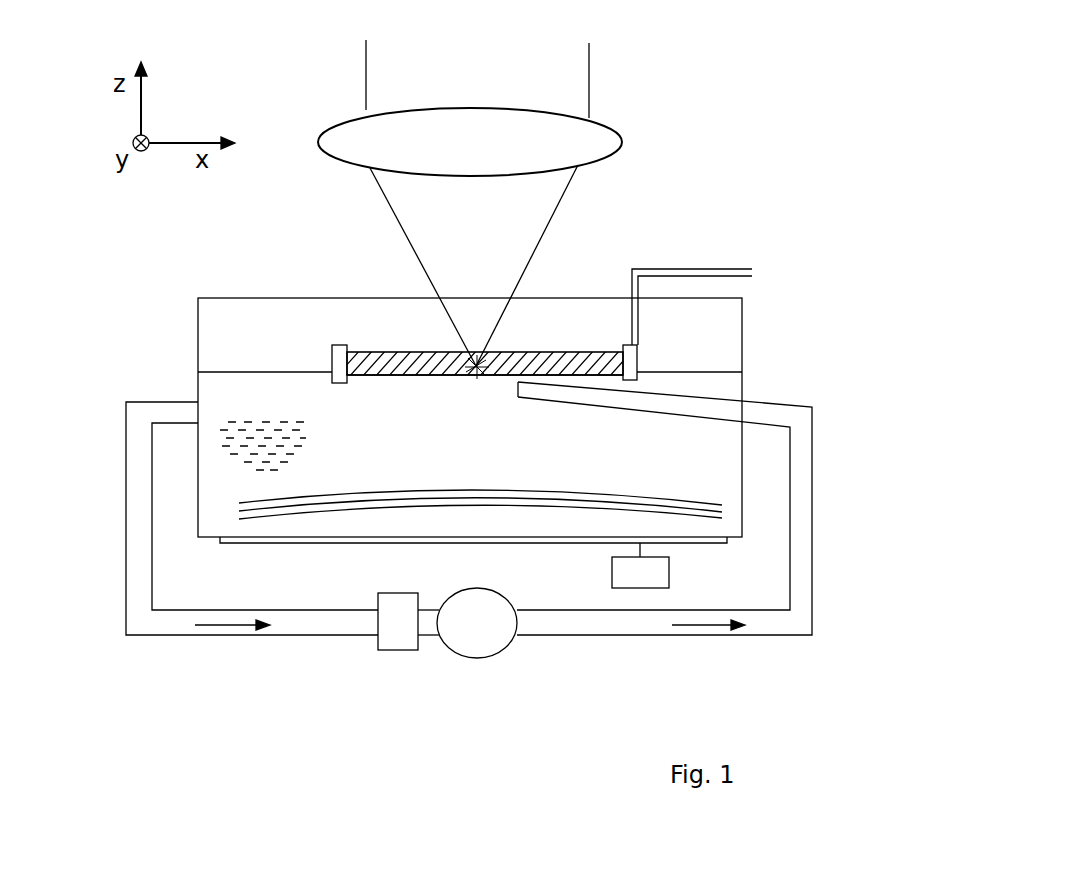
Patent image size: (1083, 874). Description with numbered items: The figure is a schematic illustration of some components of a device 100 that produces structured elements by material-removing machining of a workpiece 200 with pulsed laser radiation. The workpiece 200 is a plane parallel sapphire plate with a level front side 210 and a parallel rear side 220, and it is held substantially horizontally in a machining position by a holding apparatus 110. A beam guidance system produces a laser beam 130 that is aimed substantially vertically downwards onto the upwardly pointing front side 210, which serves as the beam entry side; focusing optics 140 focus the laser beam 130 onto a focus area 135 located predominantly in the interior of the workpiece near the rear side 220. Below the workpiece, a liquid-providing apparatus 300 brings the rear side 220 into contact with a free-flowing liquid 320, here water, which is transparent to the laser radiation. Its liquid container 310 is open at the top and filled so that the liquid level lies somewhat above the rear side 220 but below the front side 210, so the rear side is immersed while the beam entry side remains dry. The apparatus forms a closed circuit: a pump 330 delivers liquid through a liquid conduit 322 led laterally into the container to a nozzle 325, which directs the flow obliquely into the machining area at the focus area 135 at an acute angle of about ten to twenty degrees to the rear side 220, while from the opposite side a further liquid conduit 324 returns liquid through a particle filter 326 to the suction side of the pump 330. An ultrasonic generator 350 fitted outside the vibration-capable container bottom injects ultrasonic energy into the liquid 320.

The device 100 is at (746, 74).
The holding apparatus 110 is at (695, 268).
The laser beam 130 is at (535, 214).
The focus area 135 is at (465, 396).
The focusing optics 140 is at (597, 140).
The workpiece 200 is at (637, 357).
The front side 210 is at (367, 338).
The rear side 220 is at (365, 394).
The liquid-providing apparatus 300 is at (474, 560).
The liquid container 310 is at (742, 471).
The liquid 320 is at (218, 492).
The liquid conduit 322 is at (805, 588).
The further liquid conduit 324 is at (138, 585).
The nozzle 325 is at (497, 384).
The particle filter 326 is at (400, 640).
The pump 330 is at (488, 640).
The ultrasonic generator 350 is at (652, 572).